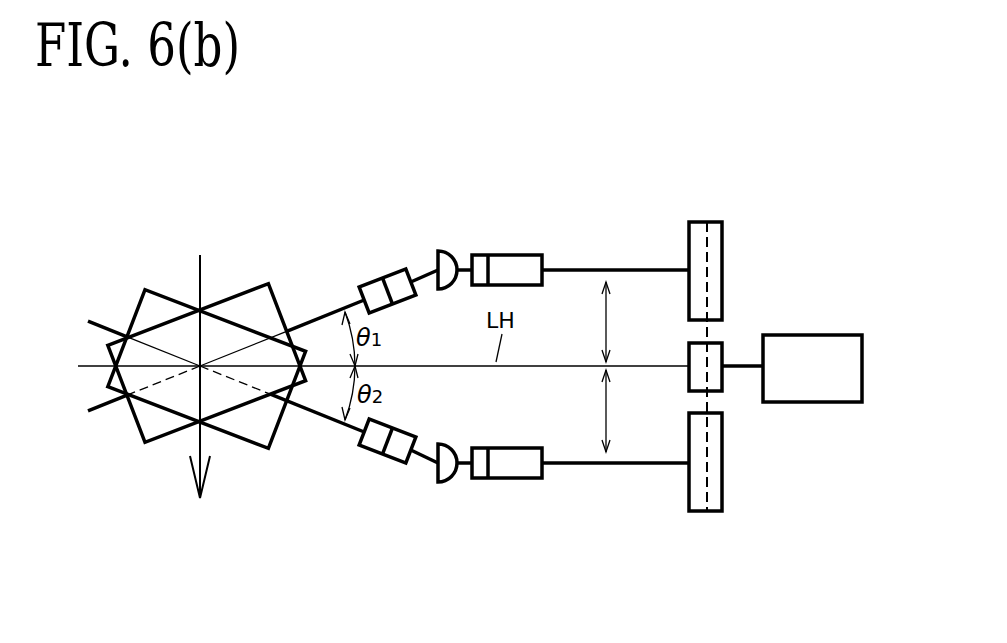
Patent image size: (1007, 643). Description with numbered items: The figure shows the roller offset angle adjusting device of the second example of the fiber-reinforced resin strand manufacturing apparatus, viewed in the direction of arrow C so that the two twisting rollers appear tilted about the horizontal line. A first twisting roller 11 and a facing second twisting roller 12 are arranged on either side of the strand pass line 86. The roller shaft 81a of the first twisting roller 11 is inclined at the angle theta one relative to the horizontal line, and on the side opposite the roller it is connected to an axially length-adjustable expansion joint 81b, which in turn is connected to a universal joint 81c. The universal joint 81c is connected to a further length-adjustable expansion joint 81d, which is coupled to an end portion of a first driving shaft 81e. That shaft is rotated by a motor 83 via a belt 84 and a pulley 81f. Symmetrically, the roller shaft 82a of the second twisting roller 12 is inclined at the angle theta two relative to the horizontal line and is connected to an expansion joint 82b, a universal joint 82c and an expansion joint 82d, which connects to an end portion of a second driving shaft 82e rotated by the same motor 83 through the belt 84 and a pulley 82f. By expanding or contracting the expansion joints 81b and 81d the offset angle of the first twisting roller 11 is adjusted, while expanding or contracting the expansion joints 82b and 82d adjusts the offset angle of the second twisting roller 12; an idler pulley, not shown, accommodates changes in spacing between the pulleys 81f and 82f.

The first twisting roller 11 is at (245, 290).
The second twisting roller 12 is at (248, 448).
The strand pass line 86 is at (197, 280).
The roller shaft 81a is at (317, 312).
The expansion joint 81b is at (376, 280).
The universal joint 81c is at (440, 251).
The expansion joint 81d is at (521, 256).
The first driving shaft 81e is at (624, 270).
The pulley 81f is at (723, 258).
The roller shaft 82a is at (327, 418).
The expansion joint 82b is at (400, 461).
The universal joint 82c is at (440, 482).
The expansion joint 82d is at (525, 480).
The second driving shaft 82e is at (632, 464).
The pulley 82f is at (723, 497).
The motor 83 is at (828, 335).
The belt 84 is at (708, 405).